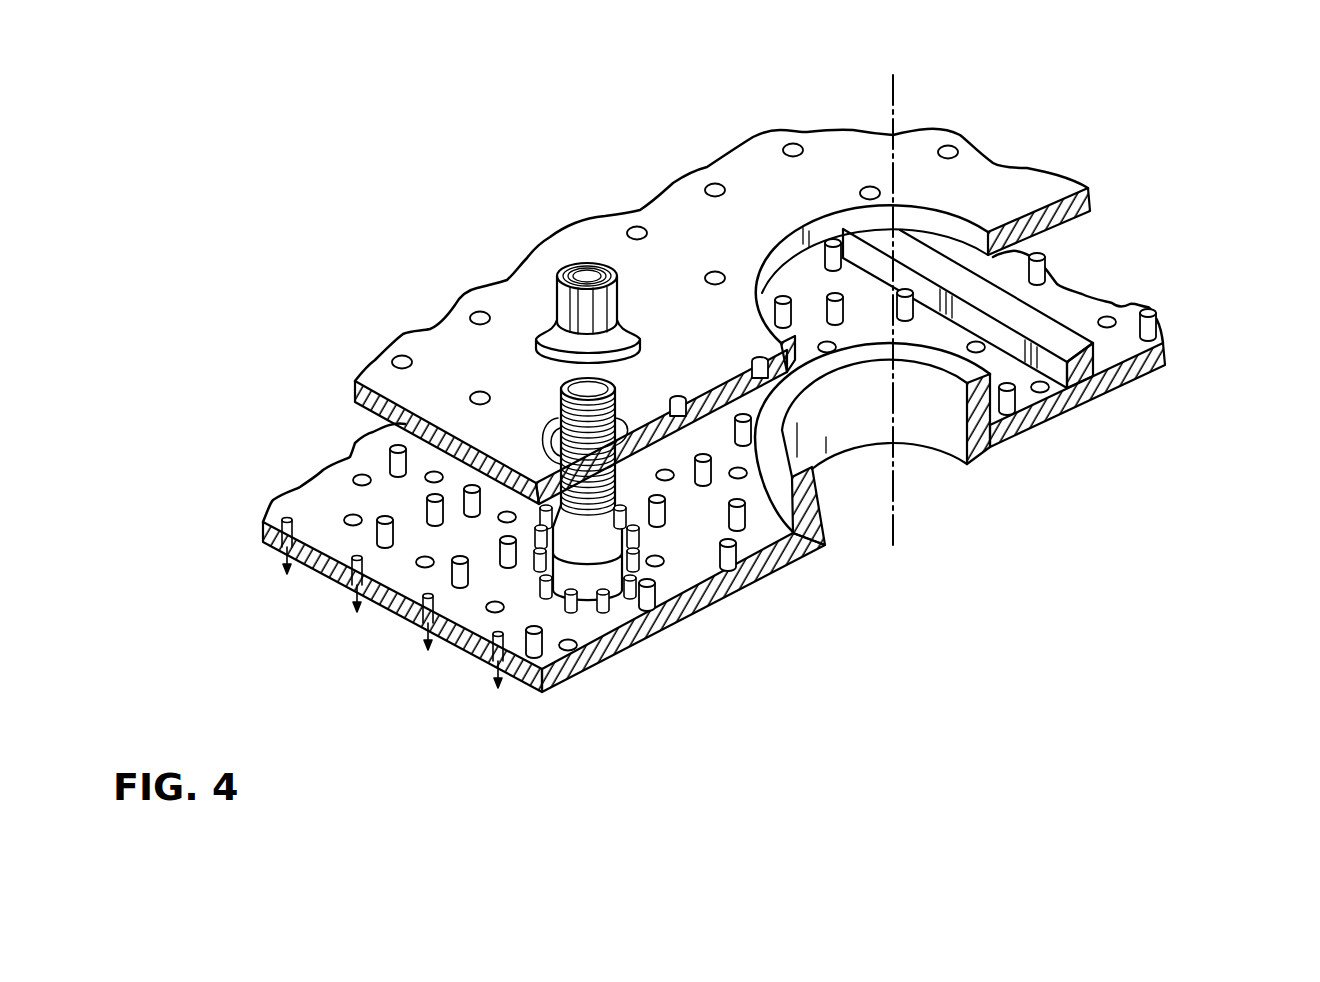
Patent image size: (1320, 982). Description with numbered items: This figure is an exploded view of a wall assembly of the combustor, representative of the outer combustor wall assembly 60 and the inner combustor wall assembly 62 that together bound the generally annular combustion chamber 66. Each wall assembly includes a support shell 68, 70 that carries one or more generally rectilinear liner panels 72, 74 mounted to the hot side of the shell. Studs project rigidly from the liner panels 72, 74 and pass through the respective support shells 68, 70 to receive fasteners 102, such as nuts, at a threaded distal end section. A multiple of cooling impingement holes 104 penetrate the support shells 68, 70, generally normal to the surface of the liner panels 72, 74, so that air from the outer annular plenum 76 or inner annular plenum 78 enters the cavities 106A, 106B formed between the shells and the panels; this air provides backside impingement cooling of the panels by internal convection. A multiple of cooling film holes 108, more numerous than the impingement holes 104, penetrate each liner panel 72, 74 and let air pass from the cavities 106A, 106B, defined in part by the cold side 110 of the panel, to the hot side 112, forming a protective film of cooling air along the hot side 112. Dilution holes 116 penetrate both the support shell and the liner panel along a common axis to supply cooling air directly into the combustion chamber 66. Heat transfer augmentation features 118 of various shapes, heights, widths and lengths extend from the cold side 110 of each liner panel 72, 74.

The outer combustor wall assembly 60 is at (719, 389).
The inner combustor wall assembly 62 is at (1167, 187).
The combustion chamber 66 is at (1010, 591).
The outer support shell 68 is at (740, 303).
The inner support shell 70 is at (1000, 141).
The liner panel 72 is at (1071, 338).
The liner panel 74 is at (1187, 339).
The outer annular plenum 76 is at (656, 303).
The inner annular plenum 78 is at (450, 245).
The fastener 102 is at (588, 262).
The cooling impingement hole 104 is at (712, 184).
The cavity 106A is at (719, 466).
The cavity 106B is at (334, 441).
The cooling film hole 108 is at (1108, 318).
The cold side 110 is at (690, 575).
The hot side 112 is at (653, 637).
The dilution hole 116 is at (926, 476).
The heat transfer augmentation feature 118 is at (384, 530).